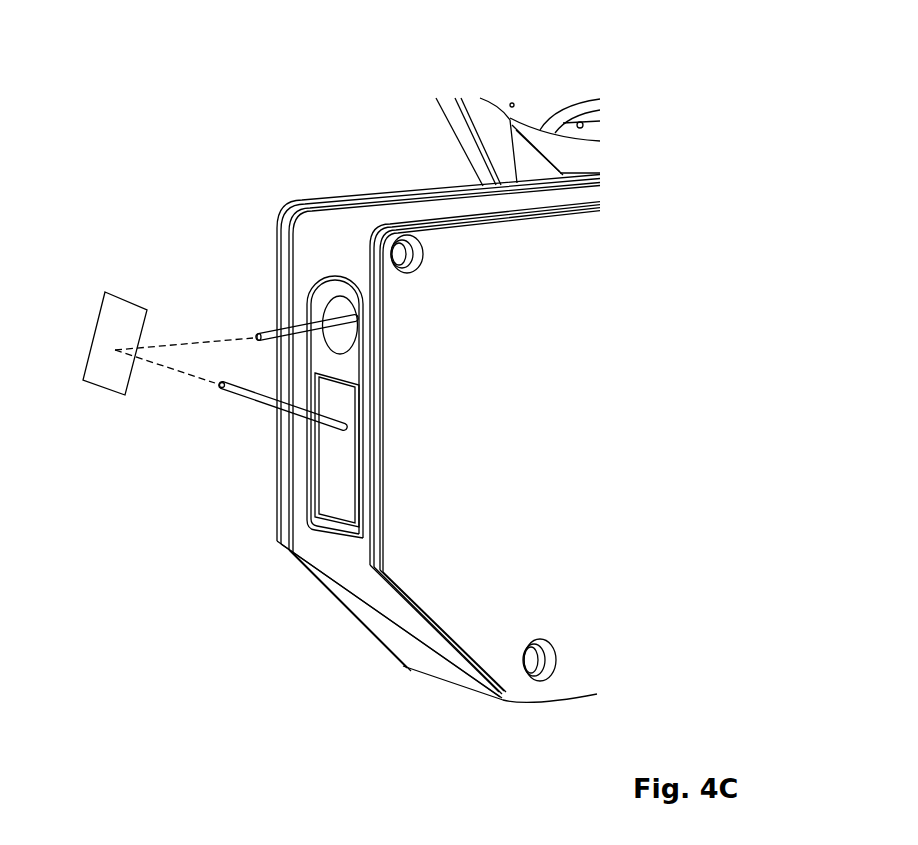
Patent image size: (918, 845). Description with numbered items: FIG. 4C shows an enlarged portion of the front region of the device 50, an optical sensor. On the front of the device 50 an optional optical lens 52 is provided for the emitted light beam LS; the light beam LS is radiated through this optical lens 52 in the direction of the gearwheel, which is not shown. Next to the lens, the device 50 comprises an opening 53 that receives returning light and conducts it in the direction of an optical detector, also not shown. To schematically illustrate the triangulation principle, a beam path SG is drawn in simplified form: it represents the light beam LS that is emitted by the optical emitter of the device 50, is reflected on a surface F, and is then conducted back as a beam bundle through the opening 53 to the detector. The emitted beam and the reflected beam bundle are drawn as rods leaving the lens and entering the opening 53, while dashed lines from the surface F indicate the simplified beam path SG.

The device 50 is at (349, 161).
The optical lens 52 is at (340, 343).
The opening 53 is at (338, 467).
The light beam LS is at (270, 330).
The surface F is at (93, 377).
The beam path SG is at (172, 372).